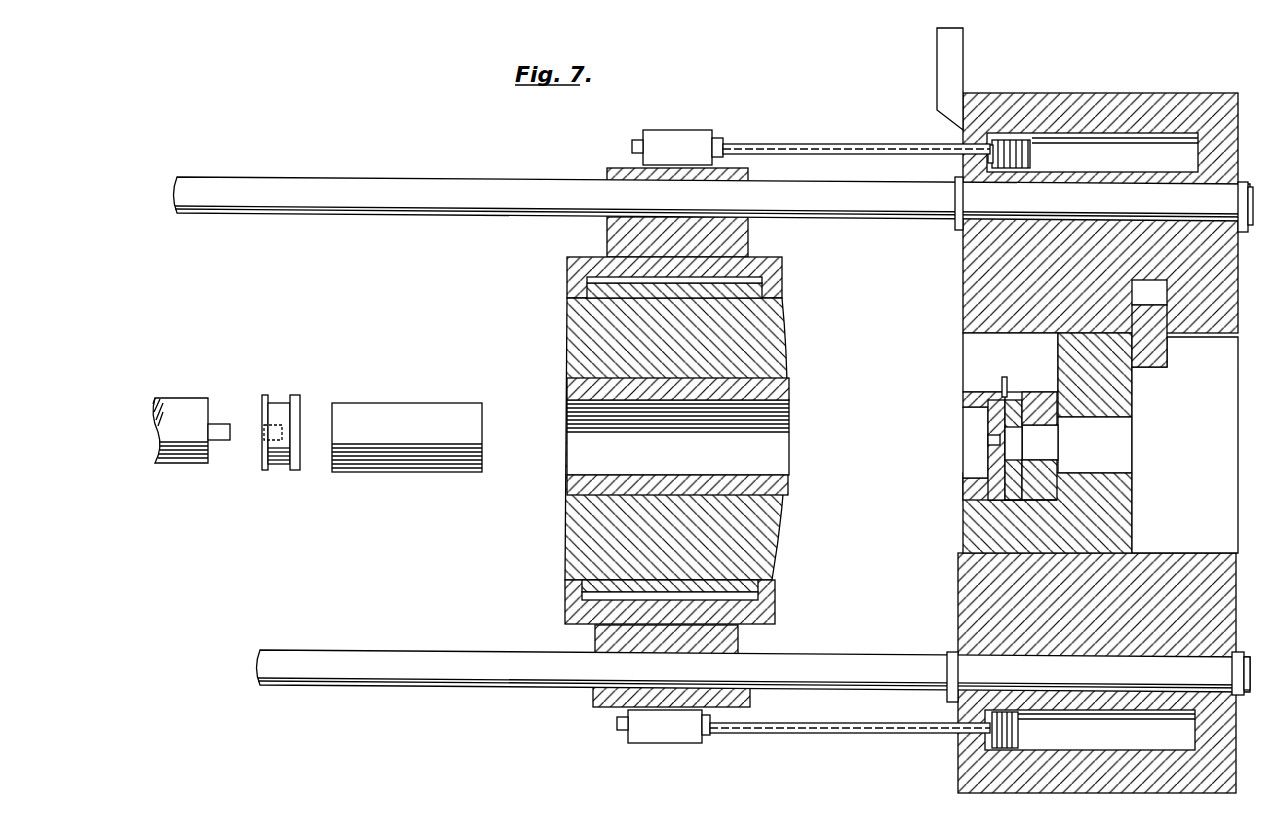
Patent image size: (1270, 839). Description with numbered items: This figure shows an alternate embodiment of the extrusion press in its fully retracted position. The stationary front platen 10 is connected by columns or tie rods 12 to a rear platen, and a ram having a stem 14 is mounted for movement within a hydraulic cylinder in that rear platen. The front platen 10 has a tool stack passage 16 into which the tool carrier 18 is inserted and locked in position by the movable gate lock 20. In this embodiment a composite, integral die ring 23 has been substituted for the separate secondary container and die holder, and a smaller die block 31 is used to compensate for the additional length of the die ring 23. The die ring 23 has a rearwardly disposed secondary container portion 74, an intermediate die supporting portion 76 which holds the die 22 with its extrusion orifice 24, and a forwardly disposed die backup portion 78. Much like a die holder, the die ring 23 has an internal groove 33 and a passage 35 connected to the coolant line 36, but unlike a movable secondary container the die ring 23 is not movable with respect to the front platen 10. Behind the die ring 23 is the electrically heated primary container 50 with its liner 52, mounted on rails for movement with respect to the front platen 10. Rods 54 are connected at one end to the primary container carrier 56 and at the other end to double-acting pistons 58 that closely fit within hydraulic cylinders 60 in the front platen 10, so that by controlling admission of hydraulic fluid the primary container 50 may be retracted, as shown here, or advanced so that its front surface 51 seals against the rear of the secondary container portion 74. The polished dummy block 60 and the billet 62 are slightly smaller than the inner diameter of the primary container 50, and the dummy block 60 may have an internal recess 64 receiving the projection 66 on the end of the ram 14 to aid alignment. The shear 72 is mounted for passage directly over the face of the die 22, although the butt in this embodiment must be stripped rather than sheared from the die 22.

The stationary front platen 10 is at (1155, 81).
The columns or tie rods 12 is at (398, 184).
The stem 14 is at (198, 405).
The tool stack passage 16 is at (1208, 433).
The tool carrier 18 is at (1124, 513).
The movable gate lock 20 is at (1163, 362).
The die 22 is at (988, 421).
The die ring 23 is at (973, 388).
The extrusion orifice 24 is at (989, 443).
The die block 31 is at (1040, 464).
The internal groove 33 is at (1002, 496).
The passage 35 is at (1016, 400).
The coolant line 36 is at (1006, 383).
The primary container 50 is at (782, 344).
The front surface 51 is at (790, 394).
The liner 52 is at (578, 393).
The rods 54 is at (762, 144).
The primary container carrier 56 is at (742, 238).
The double-acting pistons 58 is at (1020, 138).
The hydraulic cylinders 60 is at (1133, 167).
The billet 62 is at (392, 408).
The internal recess 64 is at (262, 432).
The projection 66 is at (221, 426).
The shear 72 is at (966, 56).
The secondary container portion 74 is at (990, 492).
The die supporting portion 76 is at (1000, 497).
The die backup portion 78 is at (1019, 494).